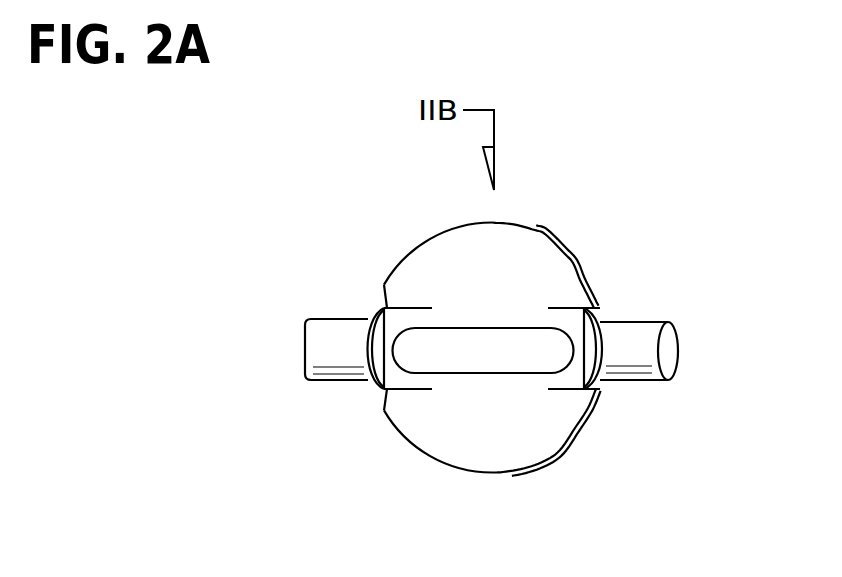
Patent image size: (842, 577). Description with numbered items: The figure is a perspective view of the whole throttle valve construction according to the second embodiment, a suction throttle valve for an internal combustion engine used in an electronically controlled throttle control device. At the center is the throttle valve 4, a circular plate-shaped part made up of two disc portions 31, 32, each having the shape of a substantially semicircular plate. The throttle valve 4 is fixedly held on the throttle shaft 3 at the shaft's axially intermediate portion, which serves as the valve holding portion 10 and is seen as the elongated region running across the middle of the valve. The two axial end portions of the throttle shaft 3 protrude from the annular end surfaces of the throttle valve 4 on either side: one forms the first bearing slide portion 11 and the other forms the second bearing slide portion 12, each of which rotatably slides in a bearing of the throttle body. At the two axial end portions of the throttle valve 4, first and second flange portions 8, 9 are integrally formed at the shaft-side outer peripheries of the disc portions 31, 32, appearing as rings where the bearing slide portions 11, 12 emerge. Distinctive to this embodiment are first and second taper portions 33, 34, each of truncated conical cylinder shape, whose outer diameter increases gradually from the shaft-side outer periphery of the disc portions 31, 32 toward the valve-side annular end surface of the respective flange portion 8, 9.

The throttle shaft 3 is at (490, 296).
The throttle valve 4 is at (545, 227).
The first flange portion 8 is at (368, 393).
The second flange portion 9 is at (604, 390).
The valve holding portion 10 is at (498, 357).
The first bearing slide portion 11 is at (322, 352).
The second bearing slide portion 12 is at (646, 350).
The disc portion 31 is at (440, 260).
The disc portion 32 is at (435, 437).
The first taper portion 33 is at (397, 318).
The second taper portion 34 is at (568, 317).